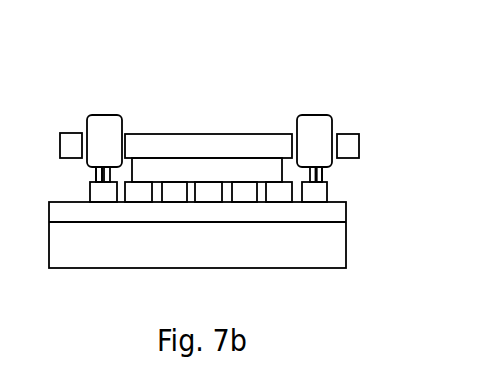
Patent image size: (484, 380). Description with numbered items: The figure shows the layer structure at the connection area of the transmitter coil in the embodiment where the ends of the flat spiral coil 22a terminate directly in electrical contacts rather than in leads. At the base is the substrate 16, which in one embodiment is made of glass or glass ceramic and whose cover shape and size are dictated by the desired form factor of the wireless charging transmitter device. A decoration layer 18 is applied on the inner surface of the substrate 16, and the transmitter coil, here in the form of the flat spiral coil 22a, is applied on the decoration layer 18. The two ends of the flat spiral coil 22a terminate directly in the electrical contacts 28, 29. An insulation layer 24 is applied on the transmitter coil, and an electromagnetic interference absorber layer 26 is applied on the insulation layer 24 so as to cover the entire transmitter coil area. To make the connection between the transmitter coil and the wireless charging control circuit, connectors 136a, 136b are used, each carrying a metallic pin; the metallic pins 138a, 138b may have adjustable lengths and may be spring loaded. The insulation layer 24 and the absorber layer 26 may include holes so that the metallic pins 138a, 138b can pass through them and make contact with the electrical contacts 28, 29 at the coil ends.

The substrate 16 is at (255, 257).
The decoration layer 18 is at (108, 215).
The flat spiral coil 22a is at (82, 187).
The insulation layer 24 is at (233, 172).
The electromagnetic interference (EMI) absorber layer 26 is at (213, 150).
The electrical contact 28 is at (104, 172).
The electrical contact 29 is at (312, 178).
The connector 136a is at (100, 115).
The connector 136b is at (312, 115).
The metallic pin 138a is at (102, 168).
The contact pins 138b is at (312, 172).